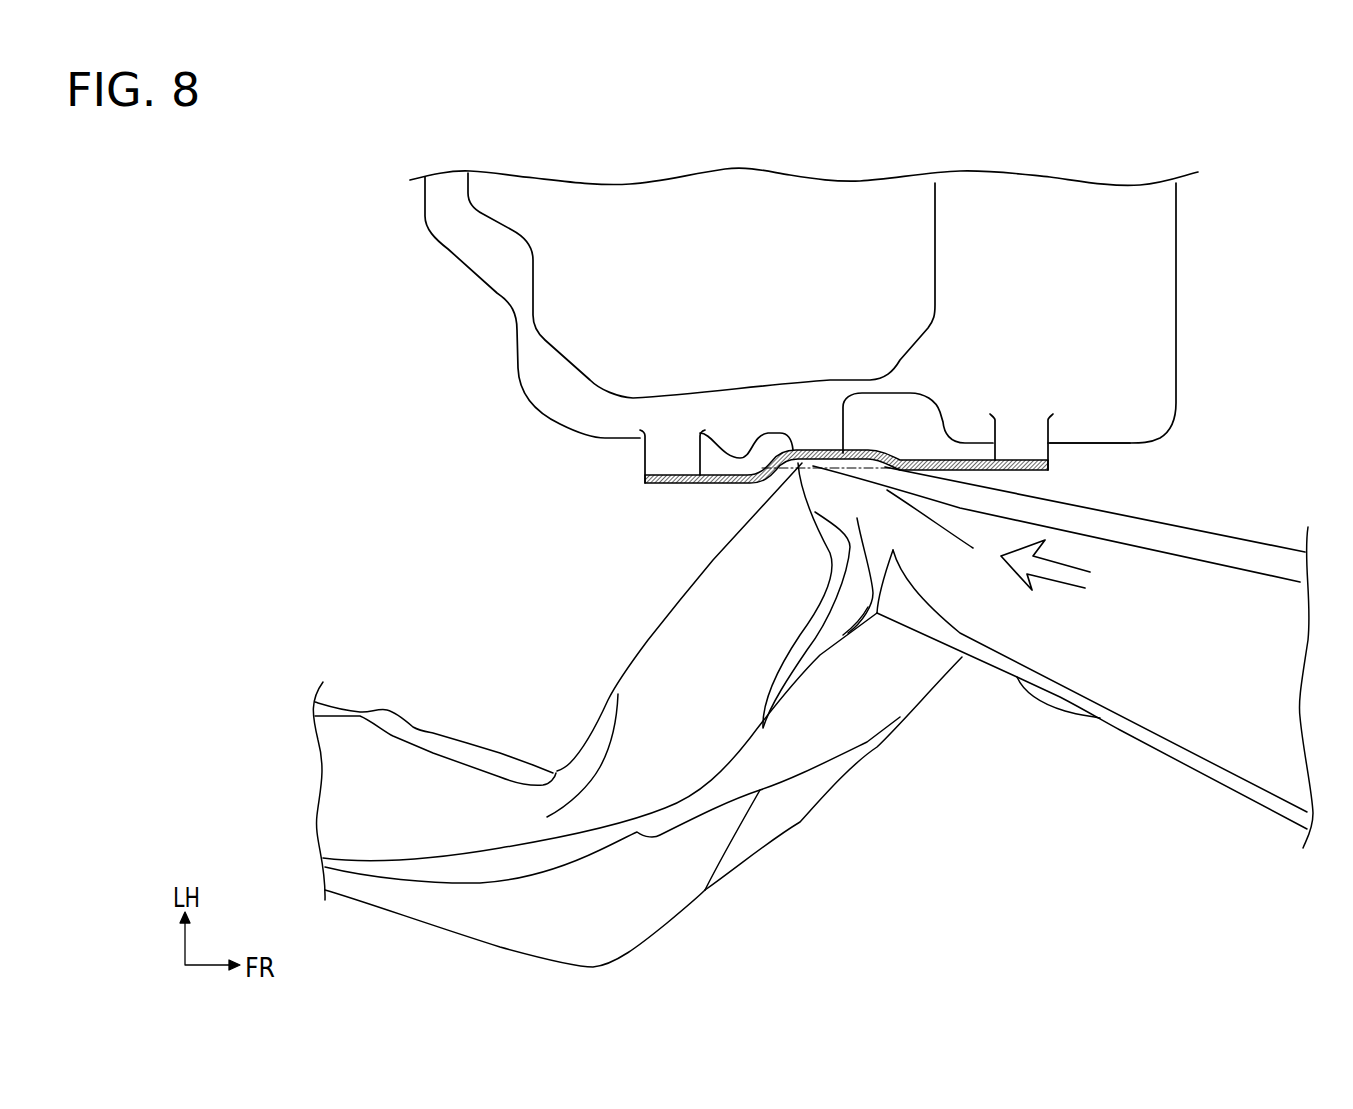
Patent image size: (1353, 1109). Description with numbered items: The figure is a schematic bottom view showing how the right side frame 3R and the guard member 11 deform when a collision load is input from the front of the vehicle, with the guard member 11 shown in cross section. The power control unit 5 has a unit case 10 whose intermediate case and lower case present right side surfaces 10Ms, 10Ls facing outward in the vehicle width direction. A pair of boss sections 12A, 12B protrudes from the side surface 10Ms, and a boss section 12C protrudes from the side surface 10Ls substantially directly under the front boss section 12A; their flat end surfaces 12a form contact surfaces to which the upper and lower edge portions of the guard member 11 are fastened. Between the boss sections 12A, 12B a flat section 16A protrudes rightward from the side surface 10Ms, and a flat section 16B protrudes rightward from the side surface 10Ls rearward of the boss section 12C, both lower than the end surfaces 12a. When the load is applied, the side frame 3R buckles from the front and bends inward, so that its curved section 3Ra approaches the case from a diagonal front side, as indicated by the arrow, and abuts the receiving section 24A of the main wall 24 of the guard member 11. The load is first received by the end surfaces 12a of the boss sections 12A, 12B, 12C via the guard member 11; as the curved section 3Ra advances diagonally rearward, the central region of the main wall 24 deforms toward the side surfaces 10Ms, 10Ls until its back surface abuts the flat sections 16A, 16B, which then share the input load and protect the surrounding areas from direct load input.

The power control unit 5 is at (1180, 212).
The unit case 10 is at (1157, 370).
The boss section 12B is at (653, 453).
The boss section 12C is at (1155, 431).
The boss section 12A is at (1037, 449).
The side surface of the lower case 10Ls is at (1190, 452).
The side surface of the intermediate case 10Ms is at (1085, 442).
The guard member 11 is at (1037, 471).
The main wall 24 is at (927, 457).
The receiving section 24A is at (830, 450).
The curved section 3Ra is at (813, 455).
The side frame 3R is at (1113, 695).
The end surface 12a is at (648, 483).
The flat section 16B is at (724, 594).
The flat section 16A is at (803, 462).